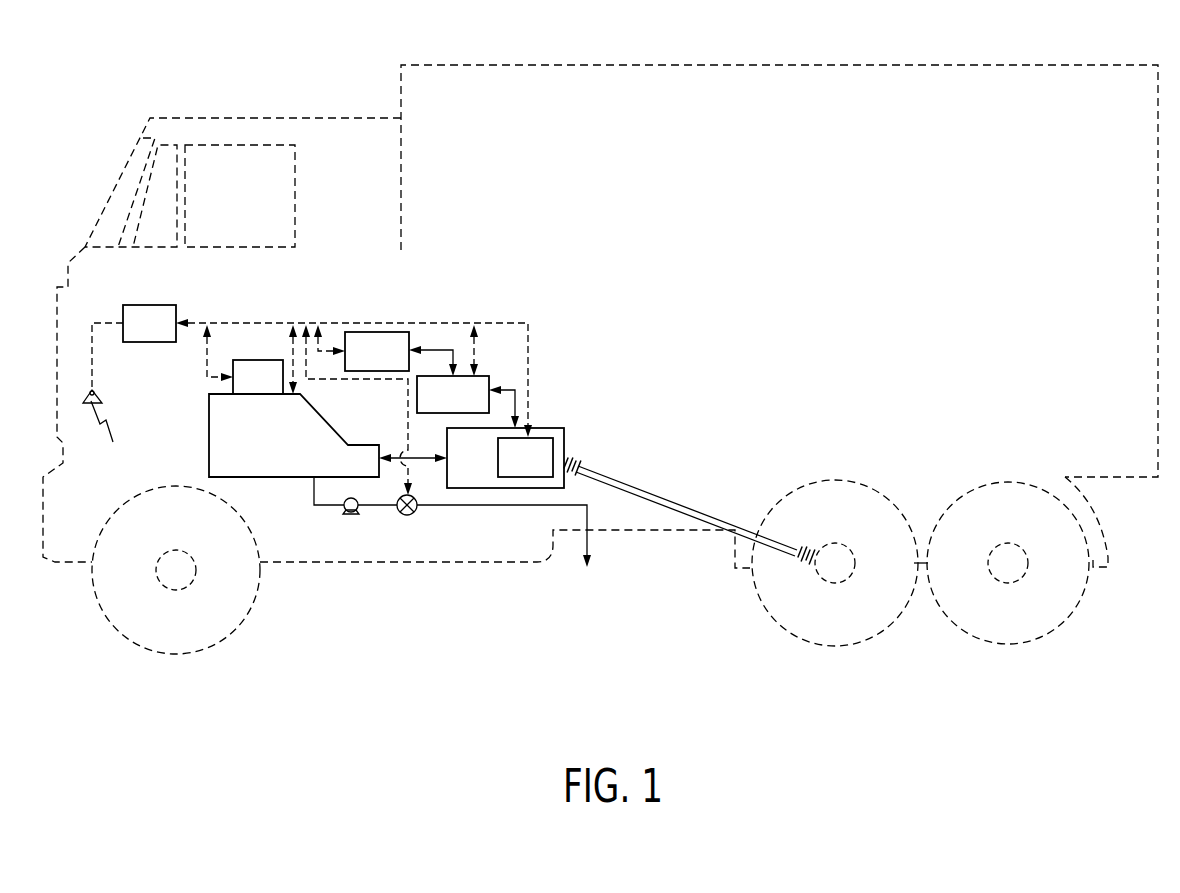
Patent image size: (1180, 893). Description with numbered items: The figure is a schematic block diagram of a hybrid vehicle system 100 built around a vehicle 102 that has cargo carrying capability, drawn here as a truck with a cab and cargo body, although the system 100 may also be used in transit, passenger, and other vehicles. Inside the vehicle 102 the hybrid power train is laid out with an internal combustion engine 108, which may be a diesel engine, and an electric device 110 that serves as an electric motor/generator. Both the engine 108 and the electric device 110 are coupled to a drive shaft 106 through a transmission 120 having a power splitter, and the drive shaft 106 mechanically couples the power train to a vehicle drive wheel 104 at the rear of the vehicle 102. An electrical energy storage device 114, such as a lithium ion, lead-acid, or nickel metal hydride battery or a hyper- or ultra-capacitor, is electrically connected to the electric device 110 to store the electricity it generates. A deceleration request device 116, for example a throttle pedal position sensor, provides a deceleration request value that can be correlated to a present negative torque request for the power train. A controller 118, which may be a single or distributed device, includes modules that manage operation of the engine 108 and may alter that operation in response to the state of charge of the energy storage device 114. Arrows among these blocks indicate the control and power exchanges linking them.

The system 100 is at (170, 88).
The vehicle 102 is at (266, 115).
The vehicle drive wheel 104 is at (830, 648).
The drive shaft 106 is at (680, 508).
The internal combustion engine 108 is at (285, 450).
The electric device 110 is at (466, 407).
The electrical energy storage device 114 is at (395, 364).
The deceleration request device 116 is at (100, 396).
The controller 118 is at (164, 337).
The transmission 120 is at (485, 472).